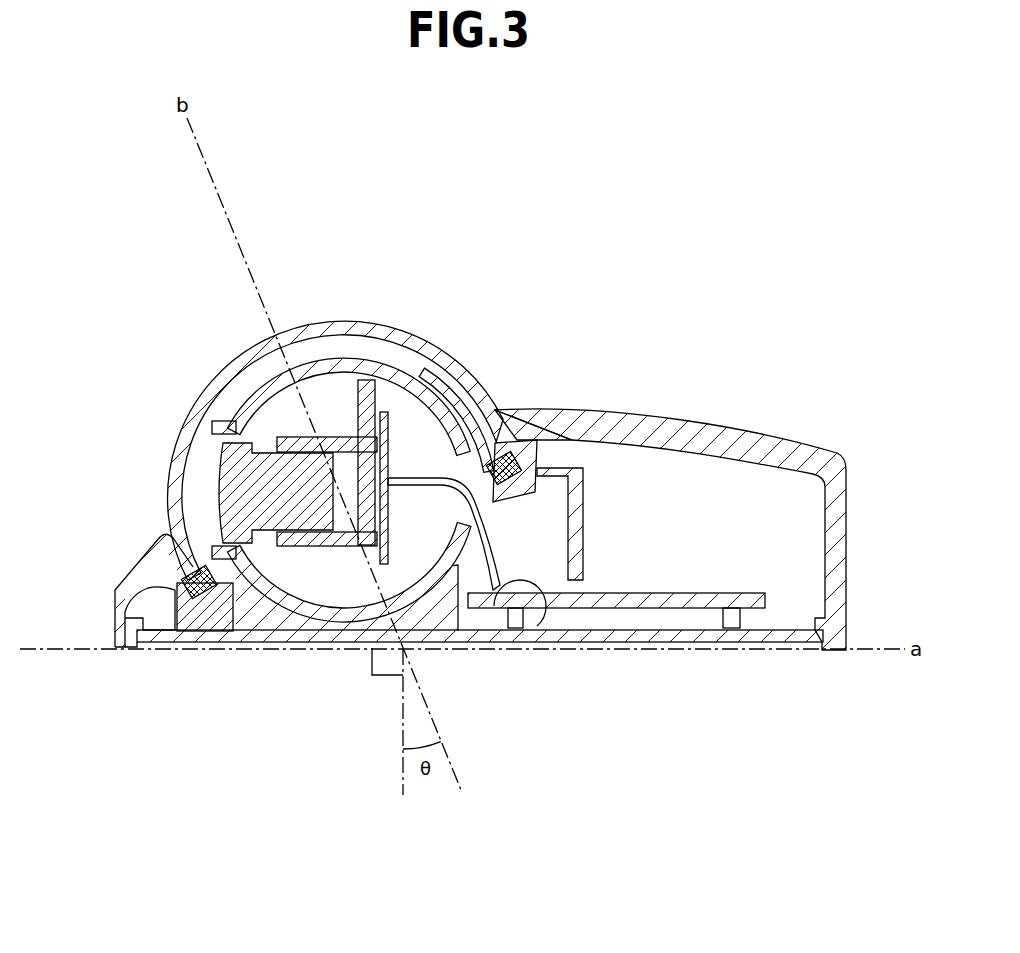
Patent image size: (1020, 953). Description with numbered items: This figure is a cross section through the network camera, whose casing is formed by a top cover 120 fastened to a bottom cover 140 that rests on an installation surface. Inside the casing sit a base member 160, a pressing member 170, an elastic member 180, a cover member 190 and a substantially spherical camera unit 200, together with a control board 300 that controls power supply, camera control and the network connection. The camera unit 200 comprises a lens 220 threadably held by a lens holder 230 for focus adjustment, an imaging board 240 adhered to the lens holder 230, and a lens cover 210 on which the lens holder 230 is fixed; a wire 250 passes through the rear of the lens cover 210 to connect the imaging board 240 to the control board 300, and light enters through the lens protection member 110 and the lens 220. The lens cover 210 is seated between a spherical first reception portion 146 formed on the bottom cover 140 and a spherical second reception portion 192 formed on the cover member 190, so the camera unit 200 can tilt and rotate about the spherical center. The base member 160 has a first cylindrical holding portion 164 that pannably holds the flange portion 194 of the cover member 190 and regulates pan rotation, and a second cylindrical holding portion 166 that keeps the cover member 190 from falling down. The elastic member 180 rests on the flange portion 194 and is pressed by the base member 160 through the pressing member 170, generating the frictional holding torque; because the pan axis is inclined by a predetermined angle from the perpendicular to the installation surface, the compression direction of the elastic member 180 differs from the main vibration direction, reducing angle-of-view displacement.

The lens protection member 110 is at (257, 343).
The top cover 120 is at (800, 462).
The bottom cover 140 is at (777, 633).
The first reception portion 146 is at (350, 635).
The base member 160 is at (580, 467).
The first cylindrical holding portion 164 is at (533, 515).
The second cylindrical holding portion 166 is at (537, 412).
The pressing member 170 is at (170, 588).
The elastic member 180 is at (205, 592).
The cover member 190 is at (430, 378).
The second reception portion 192 is at (497, 452).
The flange portion 194 is at (222, 610).
The camera unit 200 is at (216, 383).
The lens cover 210 is at (313, 367).
The lens 220 is at (227, 500).
The lens holder 230 is at (320, 617).
The imaging board 240 is at (410, 618).
The wire 250 is at (533, 630).
The control board 300 is at (682, 598).